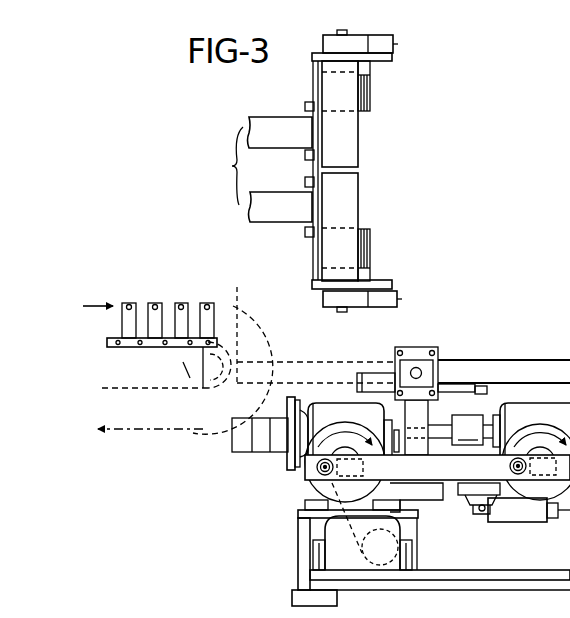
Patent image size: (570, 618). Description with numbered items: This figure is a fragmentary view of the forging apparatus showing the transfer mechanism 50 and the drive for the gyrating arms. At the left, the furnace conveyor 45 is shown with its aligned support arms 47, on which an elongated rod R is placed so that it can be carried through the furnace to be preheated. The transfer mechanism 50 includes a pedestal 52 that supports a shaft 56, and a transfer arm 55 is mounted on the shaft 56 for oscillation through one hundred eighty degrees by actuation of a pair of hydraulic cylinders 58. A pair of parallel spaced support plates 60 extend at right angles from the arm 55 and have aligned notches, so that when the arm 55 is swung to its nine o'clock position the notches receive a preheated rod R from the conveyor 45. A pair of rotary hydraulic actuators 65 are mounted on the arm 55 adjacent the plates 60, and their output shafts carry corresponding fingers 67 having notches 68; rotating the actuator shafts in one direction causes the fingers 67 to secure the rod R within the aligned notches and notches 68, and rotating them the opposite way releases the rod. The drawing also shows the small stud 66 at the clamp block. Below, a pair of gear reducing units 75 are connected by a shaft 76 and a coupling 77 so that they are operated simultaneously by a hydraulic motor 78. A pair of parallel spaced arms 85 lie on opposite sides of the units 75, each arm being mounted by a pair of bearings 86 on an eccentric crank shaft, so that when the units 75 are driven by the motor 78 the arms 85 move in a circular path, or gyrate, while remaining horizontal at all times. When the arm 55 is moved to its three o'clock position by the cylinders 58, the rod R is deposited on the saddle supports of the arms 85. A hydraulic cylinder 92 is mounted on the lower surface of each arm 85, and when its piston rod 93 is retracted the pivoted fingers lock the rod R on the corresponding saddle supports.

The endless conveyor 45 is at (162, 397).
The support arms 47 is at (152, 317).
The transfer mechanism 50 is at (294, 526).
The pedestal 52 is at (428, 414).
The transfer arm 55 is at (500, 360).
The shaft 56 is at (416, 368).
The hydraulic cylinders 58 is at (365, 374).
The support plates 60 is at (392, 58).
The rotary hydraulic actuators 65 is at (370, 96).
The stud 66 is at (340, 33).
The fingers 67 is at (358, 40).
The notches 68 is at (393, 45).
The gear reducing units 75 is at (325, 410).
The shaft 76 is at (438, 444).
The coupling 77 is at (460, 430).
The hydraulic motor 78 is at (240, 438).
The arms 85 is at (412, 477).
The bearings 86 is at (320, 470).
The hydraulic cylinder 92 is at (500, 522).
The piston rod 93 is at (555, 519).
The rod R is at (208, 303).